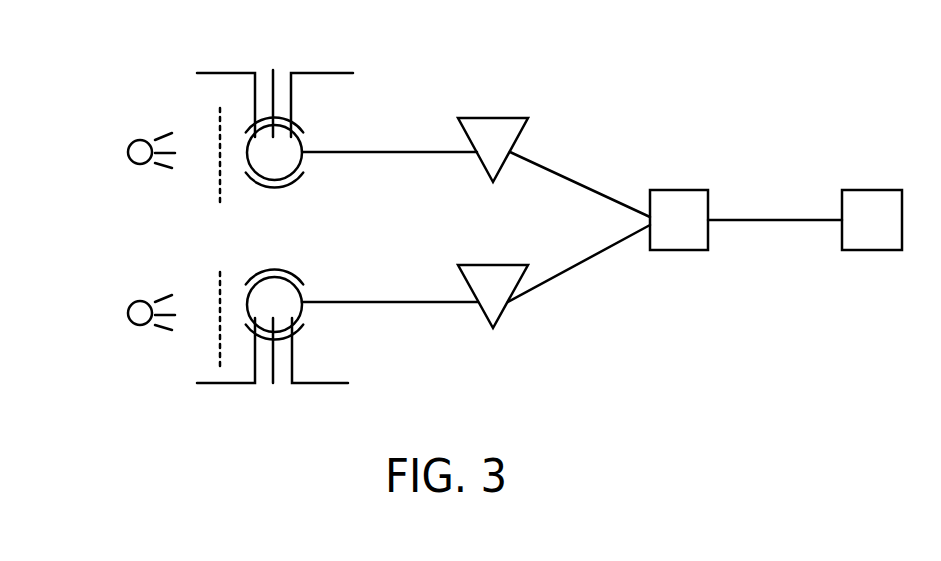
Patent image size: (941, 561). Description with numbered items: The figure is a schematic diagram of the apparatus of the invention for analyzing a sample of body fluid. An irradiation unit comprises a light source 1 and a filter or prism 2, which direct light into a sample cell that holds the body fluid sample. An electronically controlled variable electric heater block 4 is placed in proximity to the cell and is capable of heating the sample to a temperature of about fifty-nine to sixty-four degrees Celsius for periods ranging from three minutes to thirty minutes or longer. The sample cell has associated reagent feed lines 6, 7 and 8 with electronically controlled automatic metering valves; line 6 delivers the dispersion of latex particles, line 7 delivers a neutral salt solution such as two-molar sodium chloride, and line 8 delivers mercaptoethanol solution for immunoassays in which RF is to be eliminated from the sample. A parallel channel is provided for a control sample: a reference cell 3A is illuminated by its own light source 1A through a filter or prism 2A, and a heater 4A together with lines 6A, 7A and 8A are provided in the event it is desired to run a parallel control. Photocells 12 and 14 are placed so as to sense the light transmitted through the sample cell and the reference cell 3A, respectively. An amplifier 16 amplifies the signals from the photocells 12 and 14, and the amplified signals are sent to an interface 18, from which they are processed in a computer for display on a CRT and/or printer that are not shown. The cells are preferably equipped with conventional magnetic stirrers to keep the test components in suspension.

The light source 1 is at (138, 165).
The filter or prism 2 is at (218, 168).
The electronically controlled variable electric heater block 4 is at (293, 128).
The reagent feed line 6 is at (213, 98).
The reagent feed line 7 is at (274, 86).
The reagent feed line 8 is at (333, 98).
The light source 1A is at (137, 325).
The filter or prism 2A is at (218, 298).
The reference cell 3A is at (274, 304).
The heater 4A is at (273, 268).
The reagent feed line 6A is at (201, 361).
The reagent feed line 7A is at (273, 372).
The reagent feed line 8A is at (344, 361).
The photocell 12 is at (554, 167).
The photocell 14 is at (554, 276).
The amplifier 16 is at (746, 220).
The interface 18 is at (872, 220).